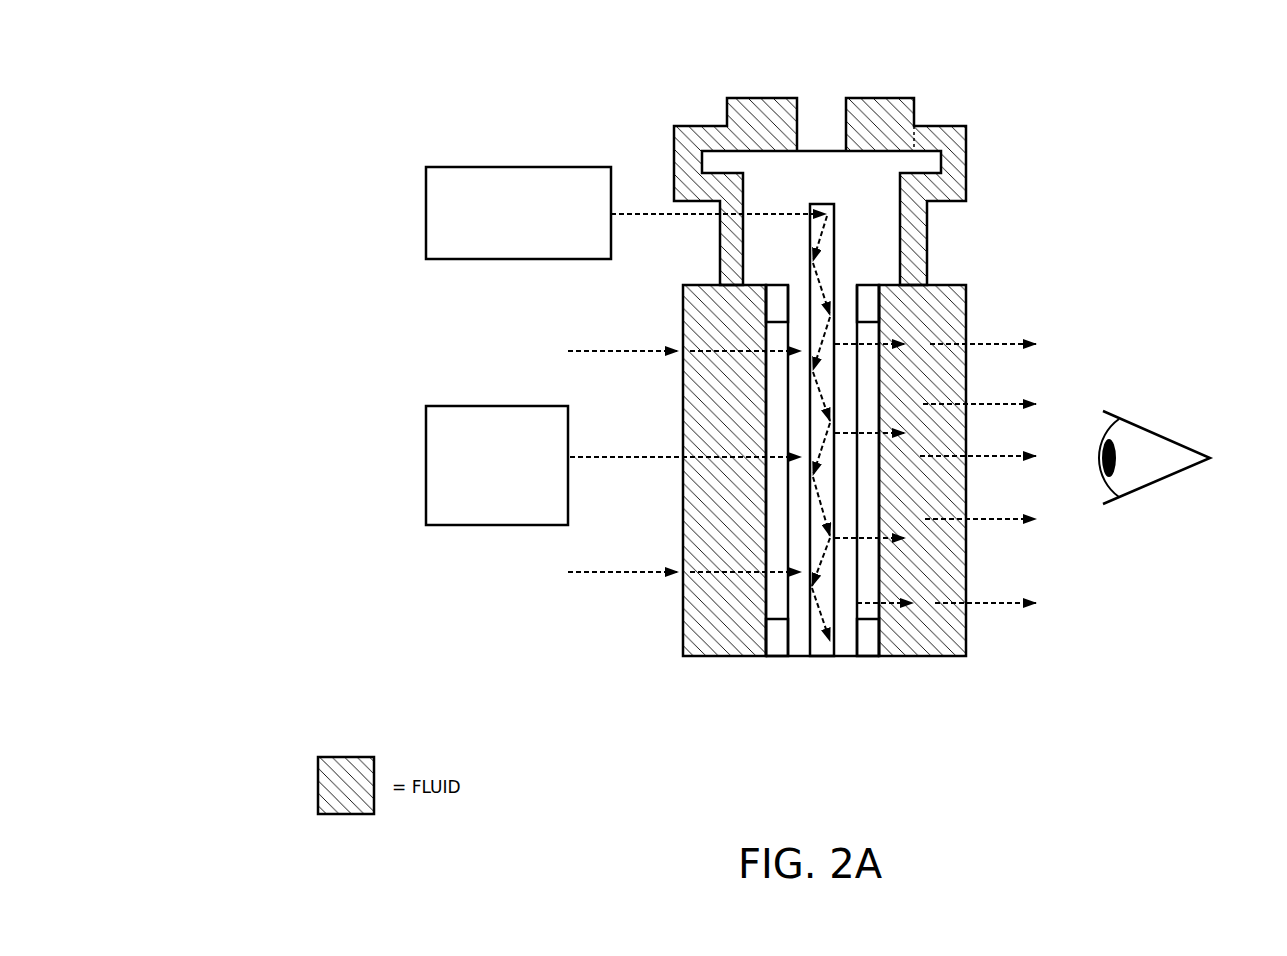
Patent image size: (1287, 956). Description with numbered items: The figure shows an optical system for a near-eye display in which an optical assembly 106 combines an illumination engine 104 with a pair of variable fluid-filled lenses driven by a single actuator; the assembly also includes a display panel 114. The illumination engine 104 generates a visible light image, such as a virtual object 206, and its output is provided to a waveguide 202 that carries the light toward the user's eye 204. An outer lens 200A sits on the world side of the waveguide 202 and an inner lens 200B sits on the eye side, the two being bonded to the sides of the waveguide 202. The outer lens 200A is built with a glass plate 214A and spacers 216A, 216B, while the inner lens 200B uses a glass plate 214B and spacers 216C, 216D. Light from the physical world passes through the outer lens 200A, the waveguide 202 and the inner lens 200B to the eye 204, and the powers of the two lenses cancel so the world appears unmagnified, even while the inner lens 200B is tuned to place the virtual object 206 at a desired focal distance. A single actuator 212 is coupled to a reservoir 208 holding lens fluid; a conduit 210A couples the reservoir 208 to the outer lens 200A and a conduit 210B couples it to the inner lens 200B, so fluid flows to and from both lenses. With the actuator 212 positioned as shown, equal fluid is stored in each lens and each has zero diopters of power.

The optical assembly 106 is at (360, 138).
The illumination engine 104 is at (428, 247).
The virtual object 206 is at (435, 511).
The display panel 114 is at (984, 122).
The reservoir 208 is at (740, 108).
The single actuator 212 is at (812, 98).
The conduit 210A is at (687, 157).
The conduit 210B is at (957, 185).
The outer lens 200A is at (708, 643).
The inner lens 200B is at (935, 656).
The waveguide 202 is at (820, 657).
The glass plate 214A is at (790, 657).
The glass plate 214B is at (843, 657).
The spacer 216A is at (772, 657).
The spacer 216B is at (777, 288).
The spacer 216C is at (867, 287).
The spacer 216D is at (872, 657).
The user's eye 204 is at (1174, 497).